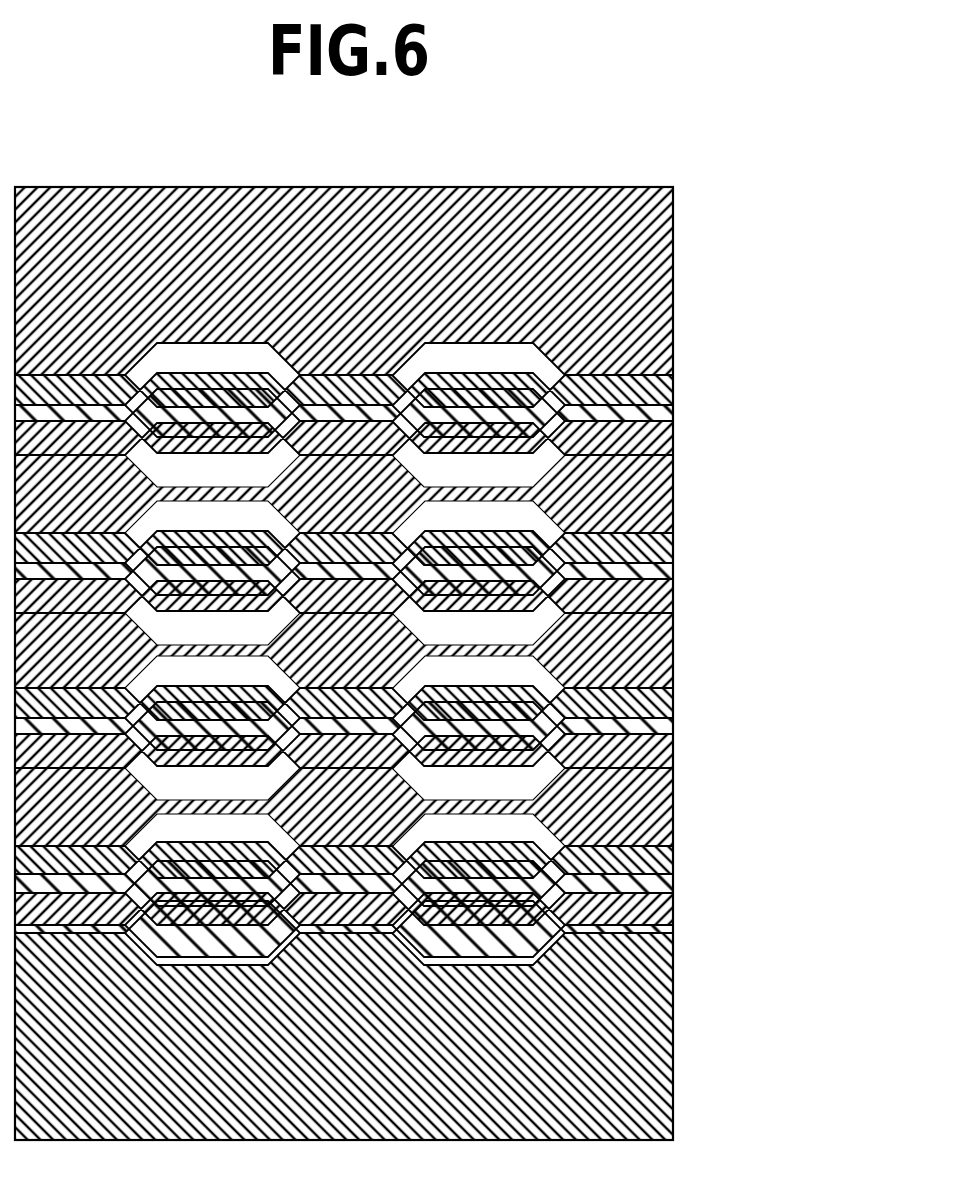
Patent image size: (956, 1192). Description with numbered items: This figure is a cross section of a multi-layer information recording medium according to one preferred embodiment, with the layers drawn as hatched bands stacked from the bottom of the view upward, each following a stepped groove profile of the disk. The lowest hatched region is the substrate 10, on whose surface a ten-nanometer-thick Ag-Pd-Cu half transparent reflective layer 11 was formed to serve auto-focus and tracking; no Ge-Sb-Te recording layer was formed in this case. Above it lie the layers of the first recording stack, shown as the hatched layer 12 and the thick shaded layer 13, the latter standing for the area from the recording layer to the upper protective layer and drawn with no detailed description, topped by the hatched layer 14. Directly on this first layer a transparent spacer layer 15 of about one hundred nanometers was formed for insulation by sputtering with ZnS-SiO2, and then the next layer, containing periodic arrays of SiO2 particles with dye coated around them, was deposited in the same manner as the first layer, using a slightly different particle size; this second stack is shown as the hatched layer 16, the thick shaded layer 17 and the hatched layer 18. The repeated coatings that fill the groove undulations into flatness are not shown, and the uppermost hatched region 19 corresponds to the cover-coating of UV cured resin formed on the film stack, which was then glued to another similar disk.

The substrate 10 is at (657, 1009).
The half transparent reflective layer 11 is at (673, 937).
The lower electrode layer 12 is at (662, 910).
The thick shaded layer 13 is at (673, 883).
The upper electrode layer 14 is at (673, 864).
The interlayer insulating film 15 is at (657, 807).
The lower electrode layer 16 is at (668, 744).
The thick shaded layer 17 is at (673, 717).
The upper electrode layer 18 is at (673, 699).
The protective insulating layer 19 is at (657, 302).